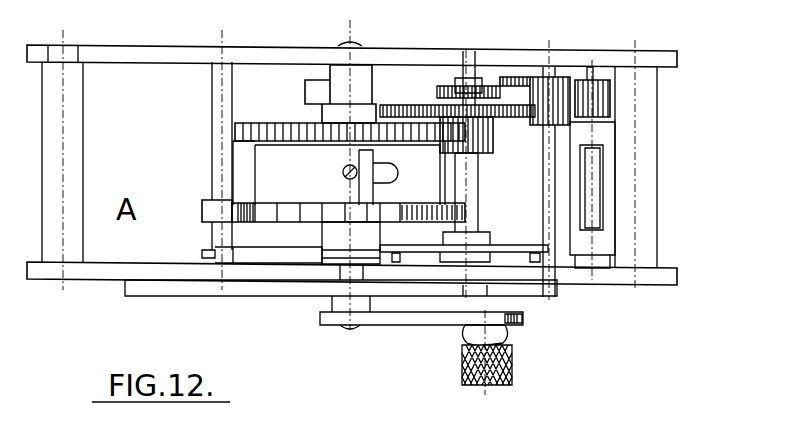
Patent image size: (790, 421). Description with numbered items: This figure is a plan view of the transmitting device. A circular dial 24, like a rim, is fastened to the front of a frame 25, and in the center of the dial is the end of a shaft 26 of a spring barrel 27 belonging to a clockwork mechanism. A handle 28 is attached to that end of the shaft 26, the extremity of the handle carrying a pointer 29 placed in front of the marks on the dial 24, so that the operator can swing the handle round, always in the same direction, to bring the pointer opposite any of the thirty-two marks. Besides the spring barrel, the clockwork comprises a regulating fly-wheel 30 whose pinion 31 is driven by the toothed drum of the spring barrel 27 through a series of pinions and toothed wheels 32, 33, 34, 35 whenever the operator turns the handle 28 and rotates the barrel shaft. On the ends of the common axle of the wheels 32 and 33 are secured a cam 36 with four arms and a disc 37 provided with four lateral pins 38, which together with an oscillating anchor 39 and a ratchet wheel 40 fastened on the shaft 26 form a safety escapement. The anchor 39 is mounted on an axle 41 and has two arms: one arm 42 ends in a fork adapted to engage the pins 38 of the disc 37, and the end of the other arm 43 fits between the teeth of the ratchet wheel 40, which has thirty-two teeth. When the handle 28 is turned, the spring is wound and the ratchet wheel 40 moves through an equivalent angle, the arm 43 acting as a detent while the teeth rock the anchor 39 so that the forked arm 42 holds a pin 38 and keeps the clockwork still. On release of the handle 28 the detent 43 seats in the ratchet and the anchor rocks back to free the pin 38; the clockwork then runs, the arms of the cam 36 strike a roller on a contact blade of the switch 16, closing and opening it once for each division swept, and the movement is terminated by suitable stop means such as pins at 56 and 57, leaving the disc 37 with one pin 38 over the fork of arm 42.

The switch 16 is at (350, 103).
The circular dial 24 is at (560, 272).
The frame 25 is at (153, 62).
The shaft 26 is at (349, 327).
The spring barrel 27 is at (339, 173).
The handle 28 is at (443, 318).
The pointer 29 is at (515, 320).
The regulating fly-wheel 30 is at (607, 226).
The pinion 31 is at (612, 91).
The toothed wheel 32 is at (490, 143).
The toothed wheel 33 is at (407, 108).
The toothed wheel 34 is at (541, 124).
The toothed wheel 35 is at (520, 74).
The cam 36 is at (475, 82).
The disc 37 is at (497, 247).
The lateral pins 38 is at (397, 262).
The oscillating anchor 39 is at (205, 254).
The ratchet wheel 40 is at (396, 216).
The axle 41 is at (222, 115).
The arm 42 is at (272, 255).
The arm 43 is at (212, 212).
The stop pin 56 is at (368, 160).
The stop pin 57 is at (344, 176).